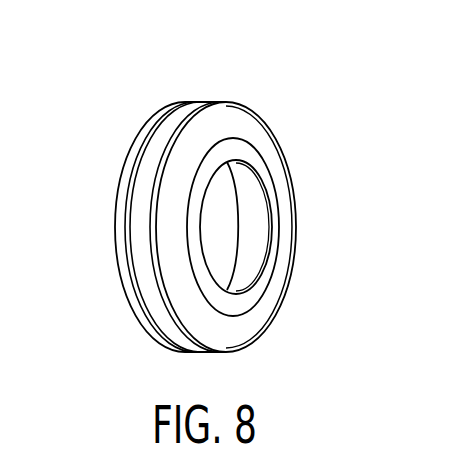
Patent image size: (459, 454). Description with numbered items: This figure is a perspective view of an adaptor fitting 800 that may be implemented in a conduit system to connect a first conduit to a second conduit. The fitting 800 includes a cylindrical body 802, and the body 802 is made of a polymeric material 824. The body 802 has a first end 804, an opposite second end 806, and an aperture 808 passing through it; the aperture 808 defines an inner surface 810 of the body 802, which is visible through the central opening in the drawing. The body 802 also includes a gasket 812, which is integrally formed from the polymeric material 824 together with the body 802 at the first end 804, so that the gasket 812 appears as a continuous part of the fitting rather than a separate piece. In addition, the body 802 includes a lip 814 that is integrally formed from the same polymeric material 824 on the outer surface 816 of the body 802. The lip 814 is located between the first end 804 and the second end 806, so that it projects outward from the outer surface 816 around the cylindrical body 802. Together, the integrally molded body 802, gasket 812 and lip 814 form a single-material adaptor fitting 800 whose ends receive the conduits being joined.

The adaptor fitting 800 is at (321, 80).
The cylindrical body 802 is at (168, 92).
The first end 804 is at (295, 255).
The second end 806 is at (130, 267).
The aperture 808 is at (215, 202).
The inner surface 810 is at (263, 203).
The gasket 812 is at (292, 187).
The lip 814 is at (140, 235).
The outer surface 816 is at (107, 199).
The polymeric material 824 is at (221, 80).